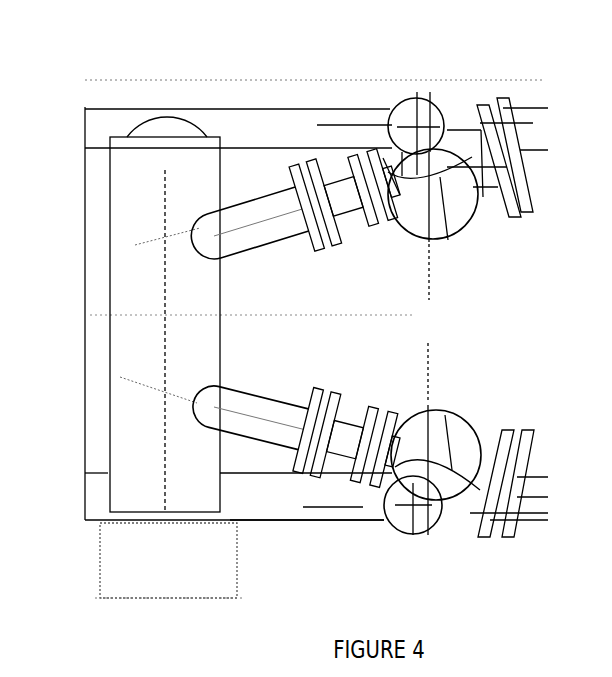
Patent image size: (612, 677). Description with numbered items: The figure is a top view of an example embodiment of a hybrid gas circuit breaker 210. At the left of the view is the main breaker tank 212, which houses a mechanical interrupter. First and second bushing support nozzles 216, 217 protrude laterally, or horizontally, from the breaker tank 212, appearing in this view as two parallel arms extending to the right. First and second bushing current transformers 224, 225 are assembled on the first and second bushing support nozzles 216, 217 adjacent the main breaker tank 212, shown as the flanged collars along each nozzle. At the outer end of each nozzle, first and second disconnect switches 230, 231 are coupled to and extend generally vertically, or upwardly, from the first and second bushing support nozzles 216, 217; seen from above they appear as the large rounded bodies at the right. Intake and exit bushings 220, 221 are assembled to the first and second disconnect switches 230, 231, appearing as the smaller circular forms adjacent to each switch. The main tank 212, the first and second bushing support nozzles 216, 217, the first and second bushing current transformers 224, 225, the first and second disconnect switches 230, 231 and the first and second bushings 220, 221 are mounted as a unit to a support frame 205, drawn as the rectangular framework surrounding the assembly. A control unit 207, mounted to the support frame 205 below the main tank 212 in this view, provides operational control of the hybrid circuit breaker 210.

The hybrid gas circuit breaker 210 is at (372, 38).
The support frame 205 is at (342, 508).
The control unit 207 is at (100, 535).
The main breaker tank 212 is at (218, 315).
The first bushing support nozzle 216 is at (243, 387).
The second bushing support nozzle 217 is at (252, 200).
The intake bushing 220 is at (417, 527).
The exit bushing 221 is at (432, 107).
The first bushing current transformer 224 is at (350, 413).
The second bushing current transformer 225 is at (350, 222).
The first disconnect switch 230 is at (455, 426).
The second disconnect switch 231 is at (455, 207).